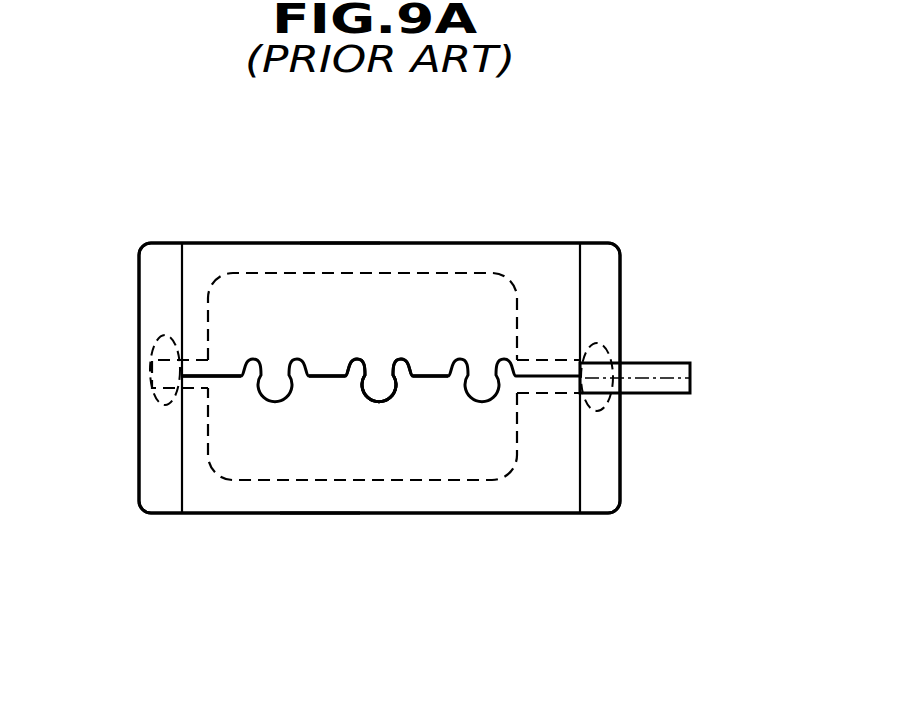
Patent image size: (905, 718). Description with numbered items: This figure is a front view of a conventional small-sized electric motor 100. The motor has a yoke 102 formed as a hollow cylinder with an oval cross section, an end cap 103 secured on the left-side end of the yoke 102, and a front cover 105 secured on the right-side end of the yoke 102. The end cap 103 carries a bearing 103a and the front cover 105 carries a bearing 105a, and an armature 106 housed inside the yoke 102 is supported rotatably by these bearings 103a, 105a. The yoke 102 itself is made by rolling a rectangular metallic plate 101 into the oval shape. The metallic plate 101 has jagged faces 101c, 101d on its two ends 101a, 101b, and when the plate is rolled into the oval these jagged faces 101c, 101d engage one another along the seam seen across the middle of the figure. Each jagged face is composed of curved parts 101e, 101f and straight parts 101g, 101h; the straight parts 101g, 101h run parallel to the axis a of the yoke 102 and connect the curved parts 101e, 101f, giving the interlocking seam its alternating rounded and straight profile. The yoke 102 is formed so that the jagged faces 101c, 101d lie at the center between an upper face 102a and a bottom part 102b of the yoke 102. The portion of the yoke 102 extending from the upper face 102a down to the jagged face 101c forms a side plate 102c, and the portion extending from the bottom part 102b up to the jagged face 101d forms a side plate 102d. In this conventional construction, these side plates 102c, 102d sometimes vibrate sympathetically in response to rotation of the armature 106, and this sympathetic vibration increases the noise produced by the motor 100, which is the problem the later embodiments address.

The small-sized electric motor 100 is at (508, 190).
The metallic plate 101 is at (265, 252).
The end of metallic plate 101a is at (323, 373).
The end of metallic plate 101b is at (320, 380).
The jagged face 101c is at (236, 376).
The jagged face 101d is at (228, 378).
The curved part 101e is at (378, 392).
The curved part 101f is at (379, 403).
The straight part 101g is at (432, 378).
The straight part 101h is at (432, 380).
The yoke 102 is at (205, 246).
The upper face of yoke 102a is at (335, 248).
The bottom part of yoke 102b is at (318, 513).
The side plate of yoke 102c is at (550, 320).
The side plate of yoke 102d is at (547, 452).
The end cap 103 is at (148, 258).
The bearing 103a is at (163, 402).
The front cover 105 is at (602, 245).
The bearing 105a is at (605, 408).
The armature 106 is at (352, 480).
The axis of yoke a is at (690, 378).